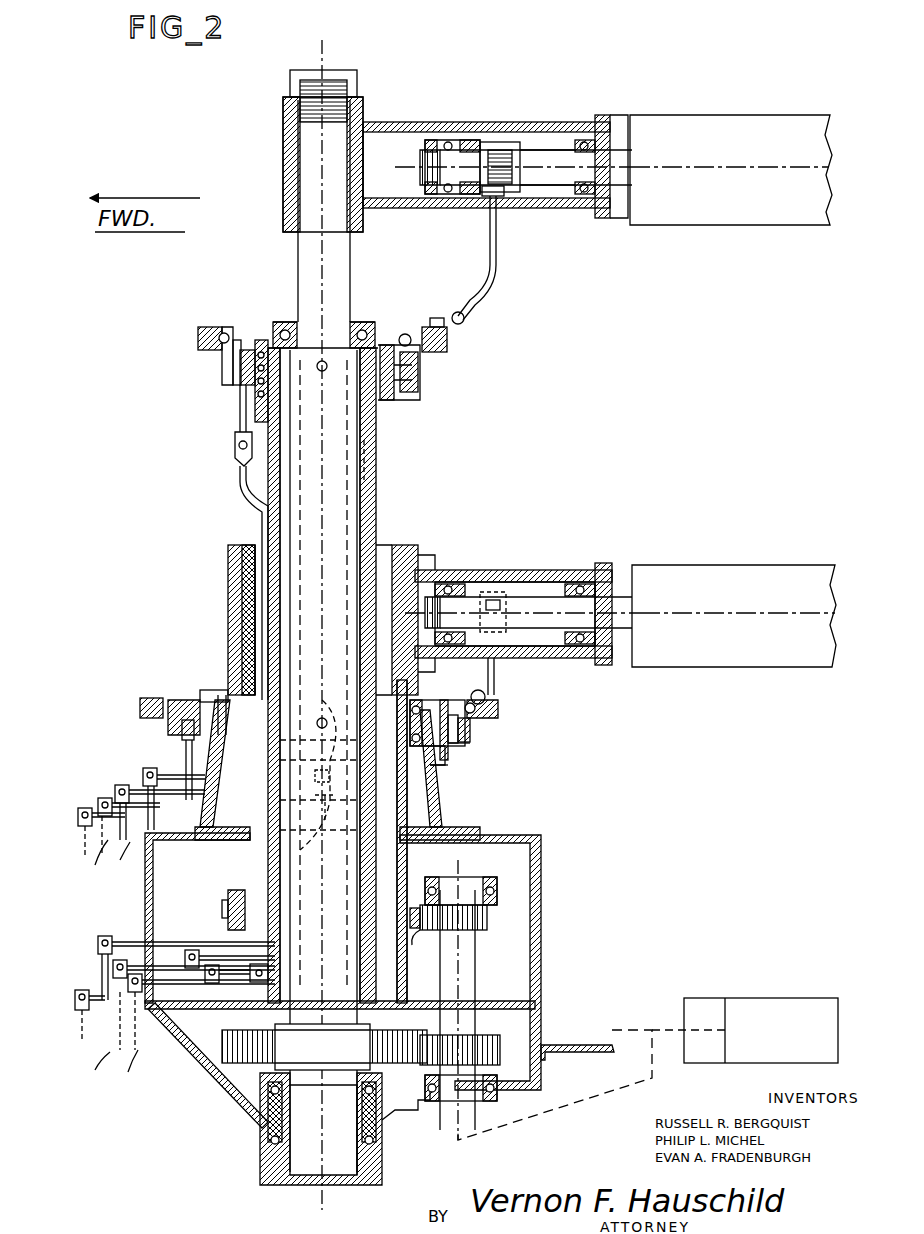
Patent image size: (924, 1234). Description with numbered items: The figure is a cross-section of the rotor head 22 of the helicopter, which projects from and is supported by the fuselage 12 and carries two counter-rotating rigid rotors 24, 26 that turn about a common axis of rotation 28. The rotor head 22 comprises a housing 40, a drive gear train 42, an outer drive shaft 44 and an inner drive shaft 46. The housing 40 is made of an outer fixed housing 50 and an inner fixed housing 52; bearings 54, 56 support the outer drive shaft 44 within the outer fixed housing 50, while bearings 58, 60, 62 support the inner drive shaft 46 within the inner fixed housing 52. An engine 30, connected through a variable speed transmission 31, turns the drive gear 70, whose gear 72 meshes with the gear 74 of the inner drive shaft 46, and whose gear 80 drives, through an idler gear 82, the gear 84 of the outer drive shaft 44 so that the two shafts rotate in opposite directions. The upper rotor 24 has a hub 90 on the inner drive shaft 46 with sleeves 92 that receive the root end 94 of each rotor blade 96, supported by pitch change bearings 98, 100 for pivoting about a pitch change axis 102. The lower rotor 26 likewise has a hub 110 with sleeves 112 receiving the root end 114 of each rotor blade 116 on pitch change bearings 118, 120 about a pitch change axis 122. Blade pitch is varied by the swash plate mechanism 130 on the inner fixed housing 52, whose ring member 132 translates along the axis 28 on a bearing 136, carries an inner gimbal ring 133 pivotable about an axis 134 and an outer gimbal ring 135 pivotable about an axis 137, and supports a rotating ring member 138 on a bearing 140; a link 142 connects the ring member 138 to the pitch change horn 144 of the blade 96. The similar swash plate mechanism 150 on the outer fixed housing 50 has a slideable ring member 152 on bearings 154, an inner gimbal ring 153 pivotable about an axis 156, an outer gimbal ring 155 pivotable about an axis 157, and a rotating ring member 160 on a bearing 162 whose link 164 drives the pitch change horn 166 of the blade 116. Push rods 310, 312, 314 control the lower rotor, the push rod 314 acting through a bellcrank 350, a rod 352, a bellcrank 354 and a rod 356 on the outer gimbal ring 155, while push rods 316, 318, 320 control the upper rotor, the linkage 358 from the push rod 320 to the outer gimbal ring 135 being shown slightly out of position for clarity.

The fuselage 12 is at (618, 1045).
The rotor head 22 is at (266, 250).
The rotor 24 is at (597, 119).
The rotor 26 is at (620, 592).
The axis of rotation 28 is at (336, 70).
The engine 30 is at (745, 995).
The variable speed transmission 31 is at (702, 1003).
The housing 40 is at (501, 1000).
The drive gear train 42 is at (480, 952).
The outer drive shaft 44 is at (410, 808).
The inner drive shaft 46 is at (312, 98).
The outer fixed housing 50 is at (542, 866).
The inner fixed housing 52 is at (382, 418).
The bearing 54 is at (210, 700).
The bearing 56 is at (230, 858).
The bearing 58 is at (360, 325).
The bearing 60 is at (268, 1148).
The bearing 62 is at (268, 1105).
The drive gear 70 is at (465, 1022).
The gear 72 is at (500, 1045).
The gear 74 is at (250, 1050).
The gear 80 is at (488, 918).
The idler gear 82 is at (411, 946).
The gear 84 is at (228, 905).
The hub 90 is at (290, 122).
The sleeve 92 is at (395, 122).
The root end 94 is at (618, 158).
The rotor blade 96 is at (762, 125).
The pitch change bearing 98 is at (598, 122).
The pitch change bearing 100 is at (450, 122).
The pitch change axis 102 is at (735, 198).
The hub 110 is at (228, 566).
The sleeve 112 is at (470, 570).
The root end 114 is at (612, 600).
The rotor blade 116 is at (712, 575).
The pitch change bearing 118 is at (445, 575).
The pitch change bearing 120 is at (578, 665).
The pitch change axis 122 is at (762, 612).
The swash plate mechanism 130 is at (418, 372).
The ring member 132 is at (236, 446).
The inner gimbal ring 133 is at (414, 380).
The axis 134 is at (320, 362).
The outer gimbal ring 135 is at (240, 378).
The bearing 136 is at (258, 400).
The axis 137 is at (232, 368).
The ring member 138 is at (196, 342).
The bearing 140 is at (245, 330).
The link 142 is at (508, 248).
The pitch change horn 144 is at (478, 200).
The swash plate mechanism 150 is at (480, 738).
The ring member 152 is at (443, 768).
The inner gimbal ring 153 is at (445, 752).
The bearing 154 is at (185, 745).
The outer gimbal ring 155 is at (472, 748).
The axis 156 is at (222, 700).
The axis 157 is at (470, 732).
The ring member 160 is at (500, 708).
The bearing 162 is at (138, 707).
The link 164 is at (496, 682).
The pitch change horn 166 is at (505, 598).
The push rod 310 is at (120, 870).
The push rod 312 is at (96, 858).
The push rod 314 is at (92, 830).
The push rod 316 is at (75, 1000).
The push rod 318 is at (108, 1060).
The push rod 320 is at (140, 1062).
The bellcrank 350 is at (116, 795).
The rod 352 is at (145, 770).
The bellcrank 354 is at (298, 830).
The rod 356 is at (322, 718).
The linkage 358 is at (368, 458).